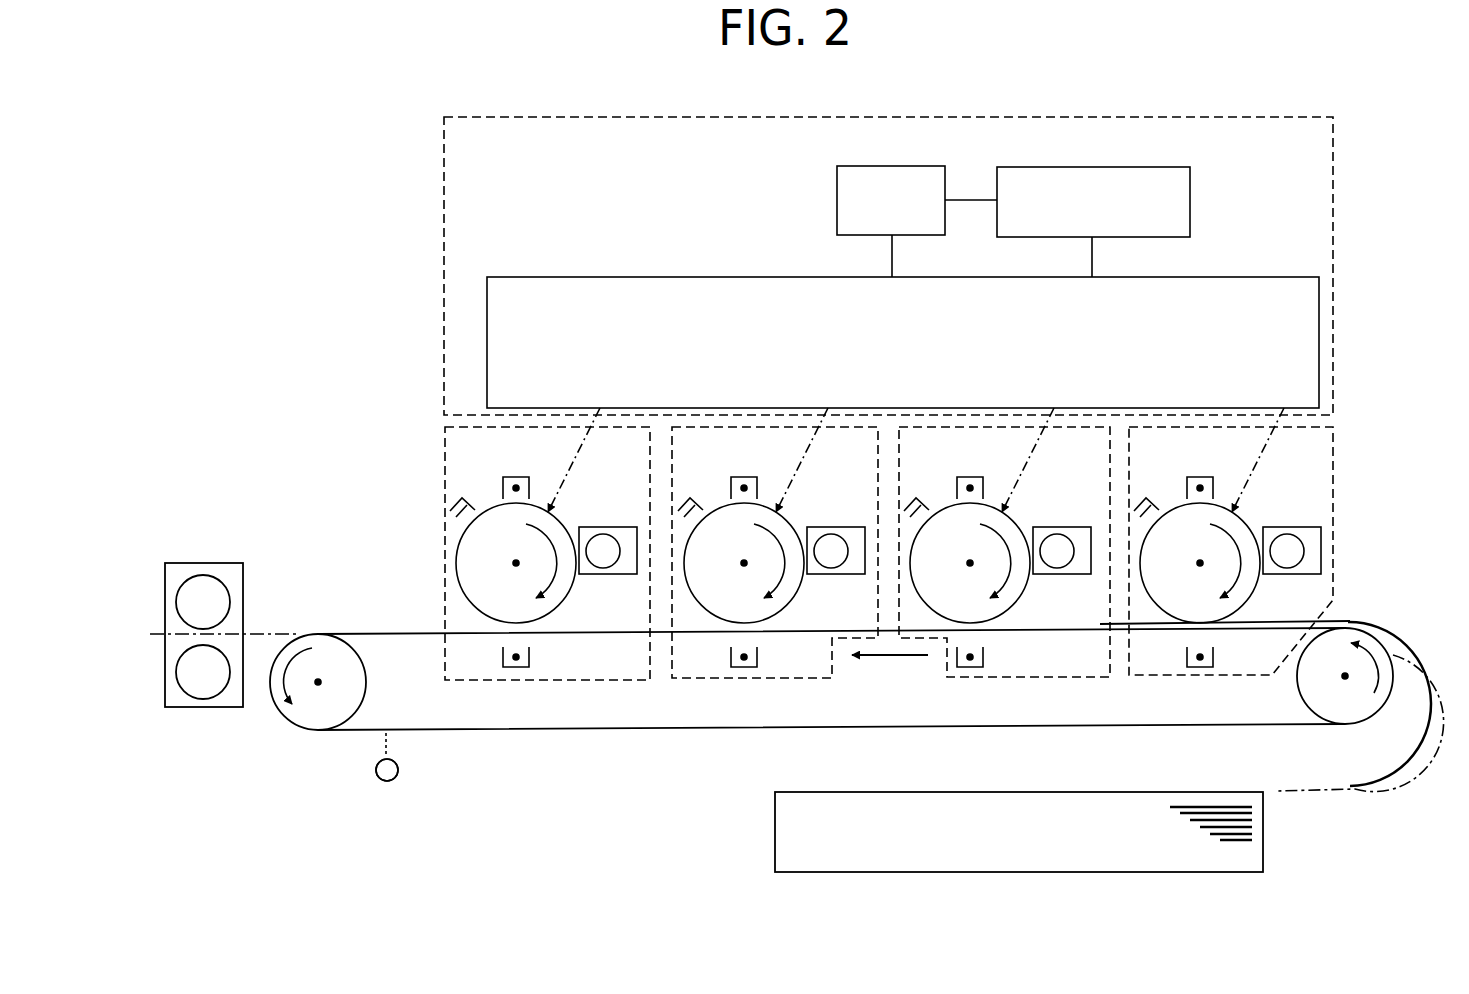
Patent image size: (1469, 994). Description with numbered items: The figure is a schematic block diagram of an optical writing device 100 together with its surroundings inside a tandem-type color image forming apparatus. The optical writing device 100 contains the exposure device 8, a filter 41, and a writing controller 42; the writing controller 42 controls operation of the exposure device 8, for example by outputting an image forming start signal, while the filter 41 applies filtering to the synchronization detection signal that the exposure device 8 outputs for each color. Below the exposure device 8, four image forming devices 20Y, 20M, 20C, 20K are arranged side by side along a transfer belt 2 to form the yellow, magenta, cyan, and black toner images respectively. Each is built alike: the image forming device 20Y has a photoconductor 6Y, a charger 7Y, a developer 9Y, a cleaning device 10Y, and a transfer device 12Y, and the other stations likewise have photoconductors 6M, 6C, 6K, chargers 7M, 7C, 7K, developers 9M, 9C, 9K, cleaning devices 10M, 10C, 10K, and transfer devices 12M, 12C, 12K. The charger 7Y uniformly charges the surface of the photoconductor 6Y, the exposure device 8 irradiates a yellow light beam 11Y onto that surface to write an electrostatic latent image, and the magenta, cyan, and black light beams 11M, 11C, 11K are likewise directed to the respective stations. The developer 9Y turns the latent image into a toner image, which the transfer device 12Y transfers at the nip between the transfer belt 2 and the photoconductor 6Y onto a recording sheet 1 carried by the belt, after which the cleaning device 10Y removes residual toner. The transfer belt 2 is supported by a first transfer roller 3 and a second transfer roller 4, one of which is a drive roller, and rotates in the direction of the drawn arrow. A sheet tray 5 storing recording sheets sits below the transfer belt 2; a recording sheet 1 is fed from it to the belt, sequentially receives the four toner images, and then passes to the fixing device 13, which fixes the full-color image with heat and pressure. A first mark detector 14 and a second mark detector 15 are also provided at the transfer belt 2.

The optical writing device 100 is at (1333, 117).
The exposure device 8 is at (1319, 277).
The filter 41 is at (945, 166).
The writing controller 42 is at (1190, 167).
The image forming device 20K is at (632, 680).
The image forming device 20C is at (815, 678).
The image forming device 20M is at (1093, 677).
The image forming device 20Y is at (1237, 675).
The photoconductor 6K is at (572, 511).
The photoconductor 6C is at (800, 511).
The photoconductor 6M is at (1026, 511).
The photoconductor 6Y is at (1256, 511).
The charger 7K is at (516, 477).
The charger 7C is at (744, 477).
The charger 7M is at (970, 477).
The charger 7Y is at (1200, 477).
The developer 9K is at (603, 574).
The developer 9C is at (831, 574).
The developer 9M is at (1057, 574).
The developer 9Y is at (1287, 574).
The cleaning device 10K is at (462, 497).
The cleaning device 10C is at (690, 497).
The cleaning device 10M is at (916, 497).
The cleaning device 10Y is at (1146, 497).
The light beam 11K is at (588, 433).
The light beam 11C is at (816, 433).
The light beam 11M is at (1042, 433).
The light beam 11Y is at (1272, 433).
The transfer device 12K is at (530, 657).
The transfer device 12C is at (758, 657).
The transfer device 12M is at (984, 657).
The transfer device 12Y is at (1214, 657).
The recording sheet 1 is at (1408, 645).
The transfer belt 2 is at (422, 634).
The first transfer roller 3 is at (1350, 724).
The second transfer roller 4 is at (318, 730).
The sheet tray 5 is at (1263, 825).
The fixing device 13 is at (220, 707).
The first mark detector 14 is at (398, 772).
The second mark detector 15 is at (415, 780).